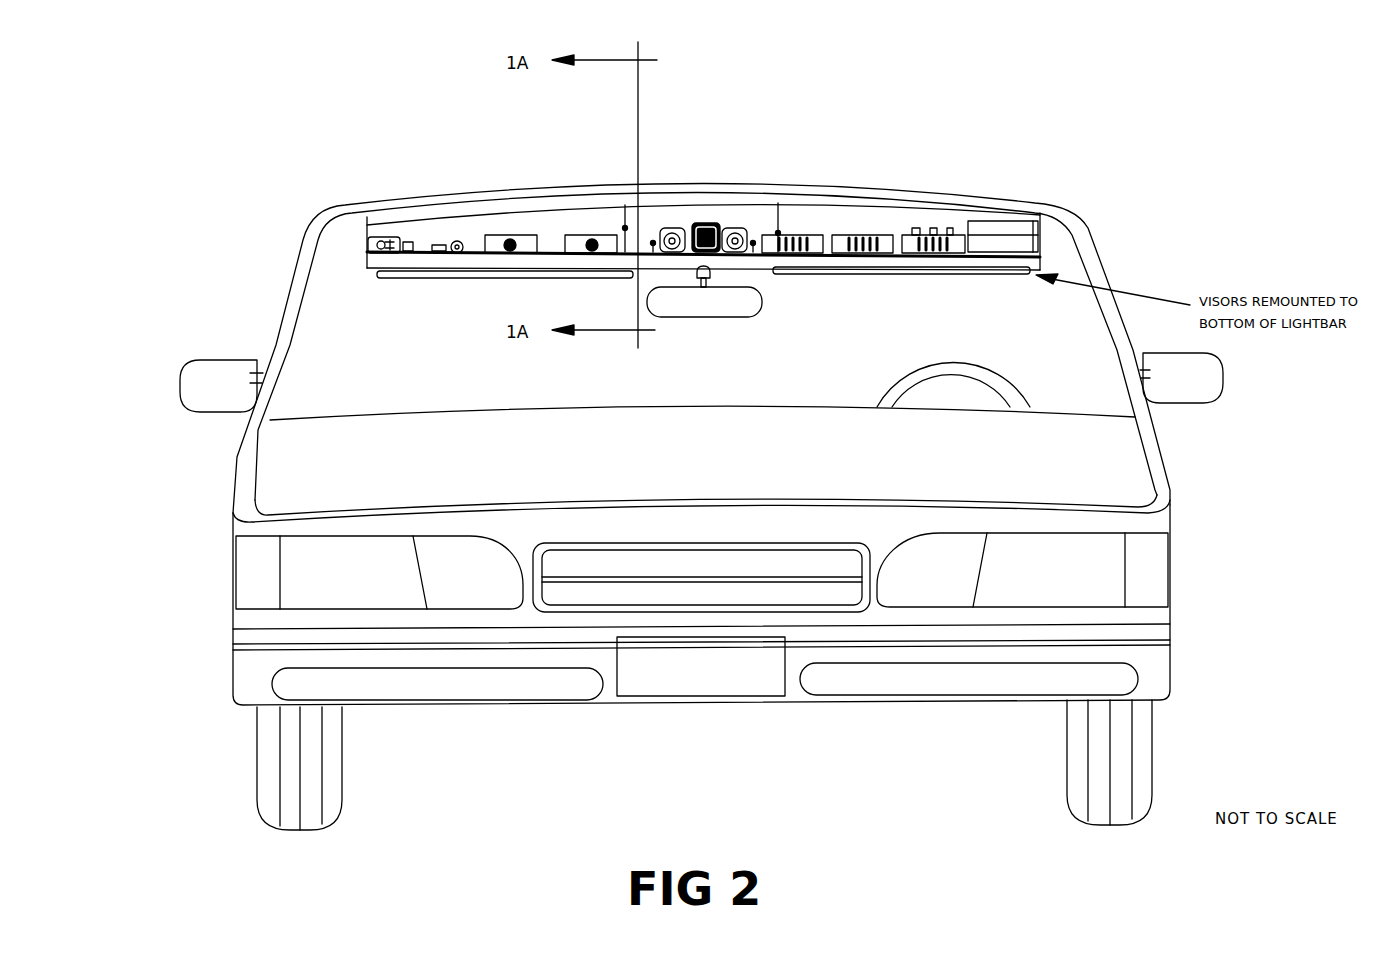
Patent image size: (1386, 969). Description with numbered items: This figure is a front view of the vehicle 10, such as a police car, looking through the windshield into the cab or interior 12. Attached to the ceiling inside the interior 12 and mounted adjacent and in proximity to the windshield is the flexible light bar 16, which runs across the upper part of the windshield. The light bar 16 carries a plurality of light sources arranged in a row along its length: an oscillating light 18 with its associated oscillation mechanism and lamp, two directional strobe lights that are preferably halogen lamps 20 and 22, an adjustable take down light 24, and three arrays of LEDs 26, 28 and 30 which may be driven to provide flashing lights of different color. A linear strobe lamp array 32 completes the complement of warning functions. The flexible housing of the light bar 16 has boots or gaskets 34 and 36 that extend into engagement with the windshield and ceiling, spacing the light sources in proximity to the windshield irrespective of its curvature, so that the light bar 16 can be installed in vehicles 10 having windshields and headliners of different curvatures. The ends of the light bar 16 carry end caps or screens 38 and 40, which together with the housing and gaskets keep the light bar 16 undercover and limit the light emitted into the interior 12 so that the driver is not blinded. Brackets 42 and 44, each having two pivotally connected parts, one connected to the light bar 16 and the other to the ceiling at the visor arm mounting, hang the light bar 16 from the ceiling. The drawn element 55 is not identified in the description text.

The vehicle 10 is at (1170, 483).
The cab or interior 12 is at (702, 370).
The flexible light bar 16 is at (352, 260).
The oscillating light 18 is at (388, 237).
The halogen lamp 20 is at (512, 235).
The halogen lamp 22 is at (573, 235).
The adjustable take down light 24 is at (736, 228).
The array of LEDs 26 is at (810, 235).
The array of LEDs 28 is at (868, 235).
The array of LEDs 30 is at (930, 232).
The linear strobe lamp array 32 is at (1016, 221).
The boot or gasket 34 is at (653, 262).
The boot or gasket 36 is at (437, 216).
The end cap or screen 38 is at (1042, 223).
The end cap or screen 40 is at (363, 231).
The bracket 42 is at (624, 222).
The bracket 44 is at (780, 206).
The video camera 55 is at (706, 223).